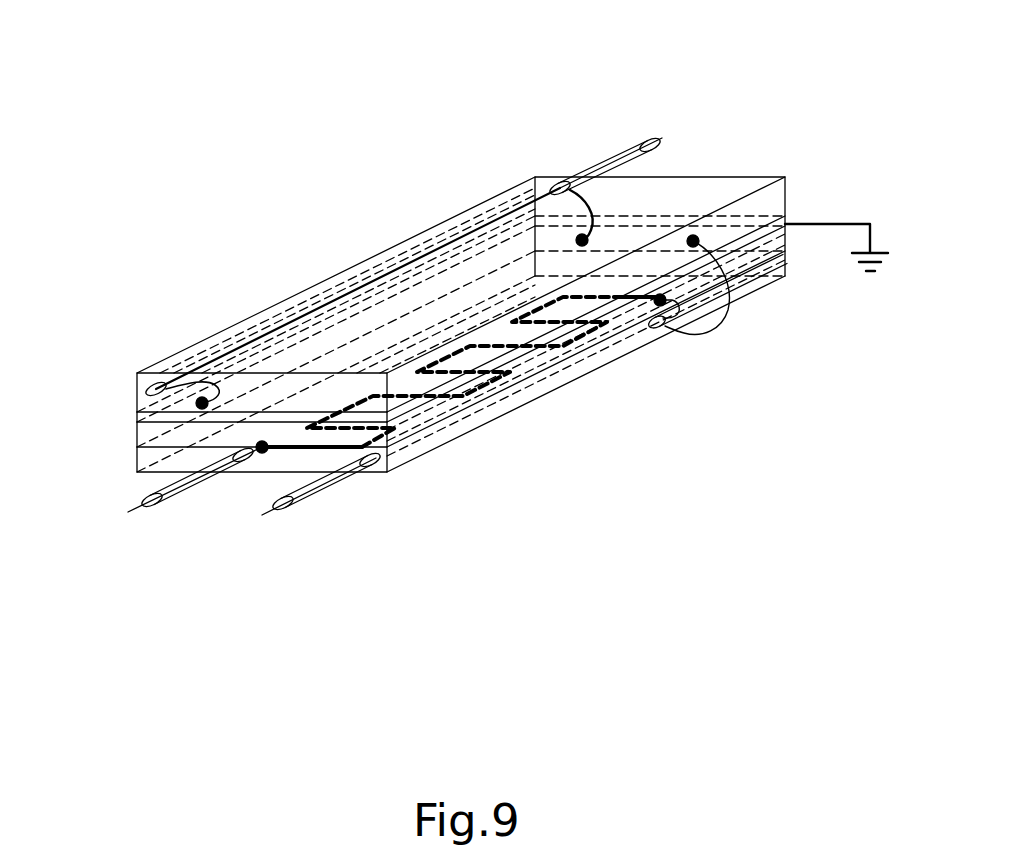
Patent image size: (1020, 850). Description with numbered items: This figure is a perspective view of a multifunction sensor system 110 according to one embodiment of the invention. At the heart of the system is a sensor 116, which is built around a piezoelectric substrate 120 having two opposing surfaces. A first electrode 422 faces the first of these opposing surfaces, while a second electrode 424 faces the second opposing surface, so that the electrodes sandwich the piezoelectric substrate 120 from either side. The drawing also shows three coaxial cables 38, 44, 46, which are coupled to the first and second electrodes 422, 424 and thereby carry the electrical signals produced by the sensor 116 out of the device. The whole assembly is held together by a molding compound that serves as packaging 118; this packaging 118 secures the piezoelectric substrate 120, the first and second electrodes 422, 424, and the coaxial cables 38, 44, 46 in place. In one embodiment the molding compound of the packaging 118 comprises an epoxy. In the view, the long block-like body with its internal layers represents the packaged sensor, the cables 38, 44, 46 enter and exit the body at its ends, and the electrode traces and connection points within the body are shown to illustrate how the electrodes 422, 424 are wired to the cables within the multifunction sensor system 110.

The multifunction sensor system 110 is at (237, 101).
The coaxial cable 38 is at (461, 324).
The second electrode 424 is at (137, 409).
The piezoelectric substrate 120 is at (150, 445).
The coaxial cable 44 is at (192, 484).
The coaxial cable 46 is at (333, 486).
The first electrode 422 is at (440, 398).
The packaging 118 is at (625, 347).
The sensor 116 is at (748, 284).